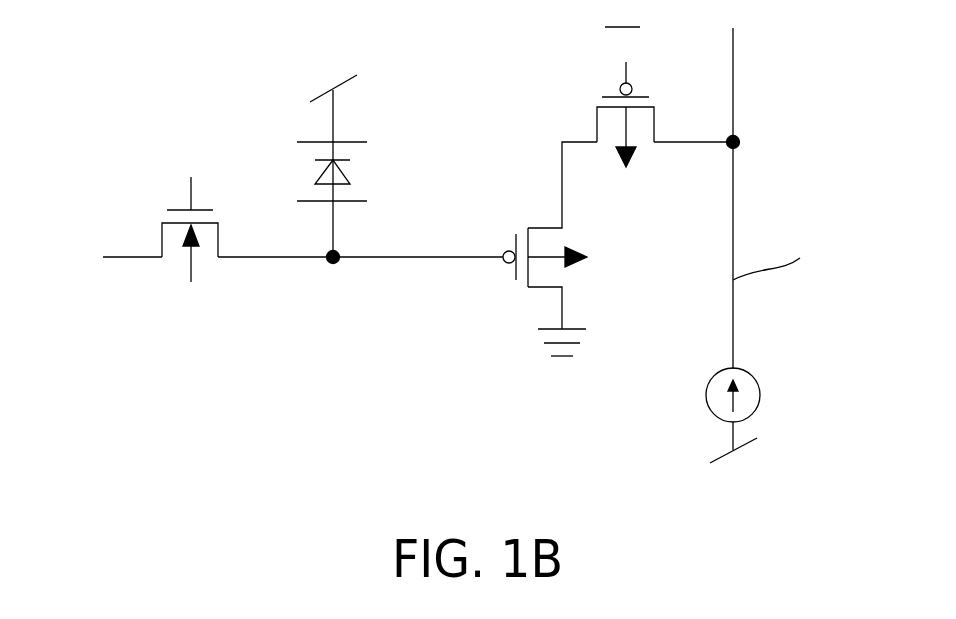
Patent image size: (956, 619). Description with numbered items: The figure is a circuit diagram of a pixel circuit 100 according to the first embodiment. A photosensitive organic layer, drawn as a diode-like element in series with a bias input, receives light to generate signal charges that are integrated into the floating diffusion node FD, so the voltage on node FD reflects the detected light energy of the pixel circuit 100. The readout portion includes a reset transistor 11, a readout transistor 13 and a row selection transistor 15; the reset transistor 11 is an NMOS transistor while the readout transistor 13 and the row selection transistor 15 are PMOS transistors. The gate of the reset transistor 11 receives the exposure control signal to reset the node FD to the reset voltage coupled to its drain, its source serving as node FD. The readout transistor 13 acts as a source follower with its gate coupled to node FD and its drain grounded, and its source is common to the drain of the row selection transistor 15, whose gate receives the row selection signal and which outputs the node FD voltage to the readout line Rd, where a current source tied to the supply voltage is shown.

The pixel circuit 100 is at (152, 27).
The reset transistor 11 is at (160, 200).
The readout transistor 13 is at (521, 296).
The row selection transistor 15 is at (653, 82).